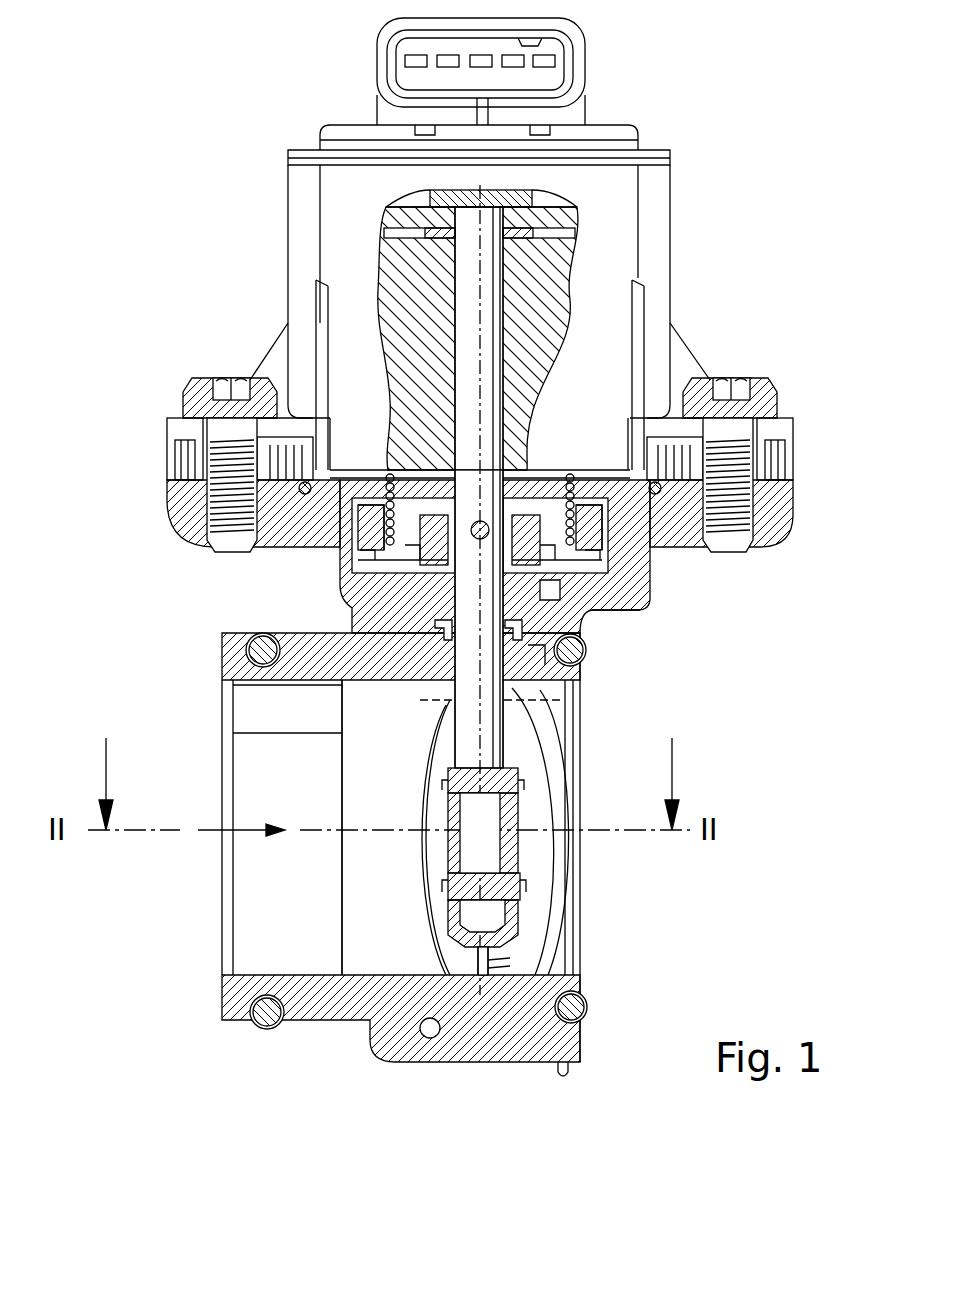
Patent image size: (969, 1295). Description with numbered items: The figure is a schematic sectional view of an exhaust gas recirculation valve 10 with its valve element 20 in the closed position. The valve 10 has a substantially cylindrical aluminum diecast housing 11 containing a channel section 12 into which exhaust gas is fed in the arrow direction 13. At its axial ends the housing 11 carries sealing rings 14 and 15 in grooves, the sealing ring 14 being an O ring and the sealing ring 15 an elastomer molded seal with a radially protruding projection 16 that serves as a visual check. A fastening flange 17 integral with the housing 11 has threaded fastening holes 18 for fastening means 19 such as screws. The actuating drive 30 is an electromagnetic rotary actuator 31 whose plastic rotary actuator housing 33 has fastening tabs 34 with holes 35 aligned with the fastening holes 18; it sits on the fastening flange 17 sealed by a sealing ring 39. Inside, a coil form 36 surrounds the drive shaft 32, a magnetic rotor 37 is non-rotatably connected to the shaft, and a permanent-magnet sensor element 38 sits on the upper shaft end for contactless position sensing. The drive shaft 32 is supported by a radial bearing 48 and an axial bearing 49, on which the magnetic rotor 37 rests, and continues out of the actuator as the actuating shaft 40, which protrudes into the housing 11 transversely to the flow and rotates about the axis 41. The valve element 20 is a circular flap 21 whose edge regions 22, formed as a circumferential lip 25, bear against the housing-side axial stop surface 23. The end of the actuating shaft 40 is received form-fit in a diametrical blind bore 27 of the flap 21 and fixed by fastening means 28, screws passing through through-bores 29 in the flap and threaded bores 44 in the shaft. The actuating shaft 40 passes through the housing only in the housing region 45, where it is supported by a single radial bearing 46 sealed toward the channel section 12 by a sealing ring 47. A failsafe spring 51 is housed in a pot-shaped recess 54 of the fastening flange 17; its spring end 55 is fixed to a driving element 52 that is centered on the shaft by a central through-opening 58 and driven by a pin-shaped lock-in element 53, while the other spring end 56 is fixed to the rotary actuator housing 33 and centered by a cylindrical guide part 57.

The valve 10 is at (715, 158).
The housing 11 is at (358, 995).
The channel section 12 is at (335, 950).
The arrow direction 13 is at (212, 832).
The sealing ring 14 is at (267, 1027).
The sealing ring 15 is at (588, 1010).
The projection 16 is at (563, 1080).
The fastening flange 17 is at (710, 530).
The fastening holes 18 is at (225, 515).
The fastening means 19 is at (190, 405).
The valve element 20 is at (430, 925).
The circular flap 21 is at (500, 940).
The edge regions 22 is at (485, 948).
The axial stop surface 23 is at (493, 970).
The circumferential lip 25 is at (483, 961).
The inner bore 27 is at (495, 848).
The fastening means 28 is at (445, 785).
The bores 29 is at (455, 768).
The actuating drive 30 is at (298, 132).
The electromagnetic rotary actuator 31 is at (367, 222).
The drive shaft 32 is at (493, 347).
The rotary actuator housing 33 is at (655, 248).
The fastening tabs 34 is at (180, 452).
The holes 35 is at (185, 475).
The coil form 36 is at (540, 295).
The magnetic rotor 37 is at (560, 210).
The sensor element 38 is at (492, 190).
The sealing ring 39 is at (630, 535).
The actuating shaft 40 is at (540, 660).
The axis 41 is at (560, 704).
The bores 44 is at (555, 800).
The housing region 45 is at (420, 668).
The radial bearing 46 is at (518, 625).
The sealing ring 47 is at (430, 680).
The radial bearing 48 is at (450, 265).
The axial bearing 49 is at (540, 233).
The spring 51 is at (395, 540).
The driving element 52 is at (600, 525).
The lock-in element 53 is at (395, 588).
The recess 54 is at (595, 590).
The spring end 55 is at (560, 603).
The spring end 56 is at (390, 470).
The guide part 57 is at (565, 470).
The central through-opening 58 is at (484, 522).